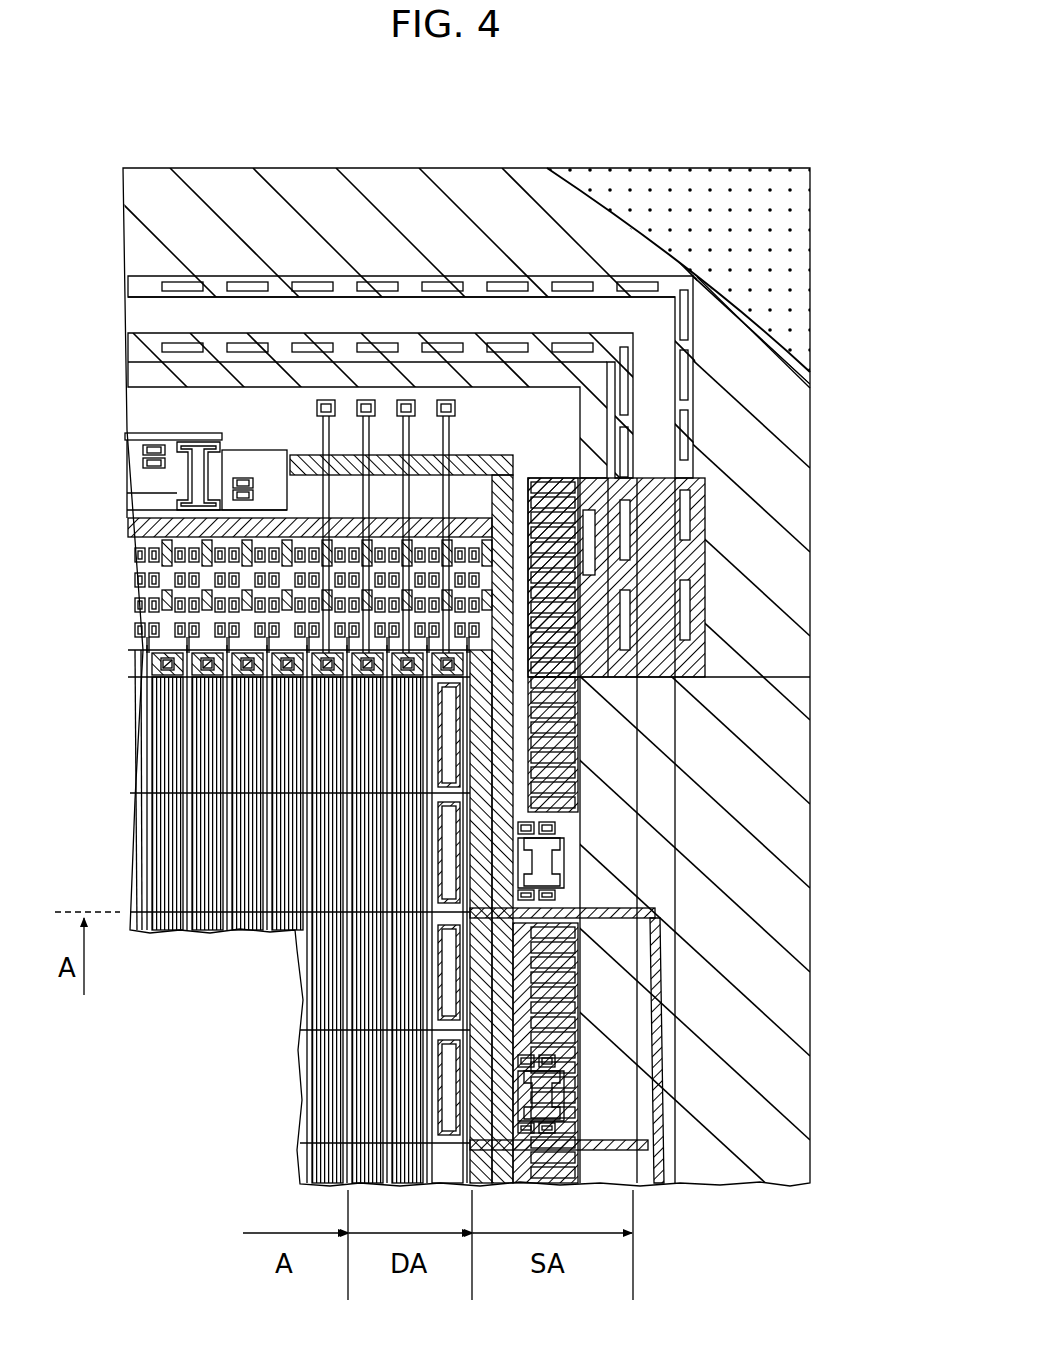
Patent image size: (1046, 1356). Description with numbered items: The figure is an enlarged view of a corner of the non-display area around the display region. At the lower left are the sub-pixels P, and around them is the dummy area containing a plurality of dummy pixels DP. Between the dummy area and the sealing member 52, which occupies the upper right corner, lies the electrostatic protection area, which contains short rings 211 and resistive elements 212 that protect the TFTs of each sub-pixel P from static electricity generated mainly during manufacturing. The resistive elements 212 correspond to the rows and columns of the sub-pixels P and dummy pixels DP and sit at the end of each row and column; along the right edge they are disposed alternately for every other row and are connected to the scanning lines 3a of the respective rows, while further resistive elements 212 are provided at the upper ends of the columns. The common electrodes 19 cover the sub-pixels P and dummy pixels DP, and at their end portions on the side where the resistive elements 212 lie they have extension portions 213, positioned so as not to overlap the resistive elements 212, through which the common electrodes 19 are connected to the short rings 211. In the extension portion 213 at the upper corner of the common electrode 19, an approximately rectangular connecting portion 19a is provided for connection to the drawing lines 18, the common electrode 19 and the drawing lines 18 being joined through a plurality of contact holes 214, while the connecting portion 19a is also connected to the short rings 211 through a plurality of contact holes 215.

The drawing line 18 is at (385, 180).
The sealing member 52 is at (697, 180).
The resistive element 212 is at (210, 557).
The contact hole 215 is at (705, 512).
The contact hole 214 is at (705, 540).
The connecting portion 19a is at (665, 603).
The common electrode 19 is at (152, 700).
The dummy pixel DP is at (255, 914).
The extension portion 213 is at (580, 762).
The scanning line 3a is at (659, 958).
The short ring 211 is at (610, 1070).
The sub-pixel P is at (320, 1066).